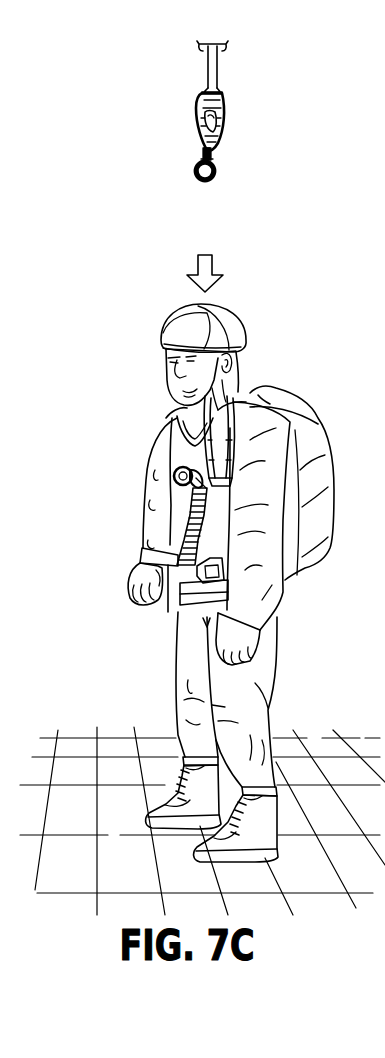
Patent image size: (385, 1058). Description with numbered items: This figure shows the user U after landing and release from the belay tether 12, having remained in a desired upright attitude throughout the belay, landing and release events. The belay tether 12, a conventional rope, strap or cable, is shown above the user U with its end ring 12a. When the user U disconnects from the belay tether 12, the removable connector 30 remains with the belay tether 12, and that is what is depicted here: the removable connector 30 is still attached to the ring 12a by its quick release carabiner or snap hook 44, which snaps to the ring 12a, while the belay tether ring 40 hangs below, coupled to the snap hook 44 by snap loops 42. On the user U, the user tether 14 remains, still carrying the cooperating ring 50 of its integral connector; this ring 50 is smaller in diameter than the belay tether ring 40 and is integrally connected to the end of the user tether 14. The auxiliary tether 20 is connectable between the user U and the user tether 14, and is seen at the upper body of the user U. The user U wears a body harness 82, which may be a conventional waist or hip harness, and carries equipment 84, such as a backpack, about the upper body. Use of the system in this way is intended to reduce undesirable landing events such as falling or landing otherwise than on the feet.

The belay tether 12 is at (217, 62).
The ring 12a is at (197, 91).
The removable connector 30 is at (190, 128).
The snap hook 44 is at (220, 123).
The snap loops 42 is at (212, 153).
The belay tether ring 40 is at (194, 165).
The user U is at (294, 356).
The auxiliary tether 20 is at (228, 475).
The cooperating ring 50 is at (177, 472).
The user tether 14 is at (187, 527).
The body harness 82 is at (182, 596).
The equipment 84 is at (317, 453).